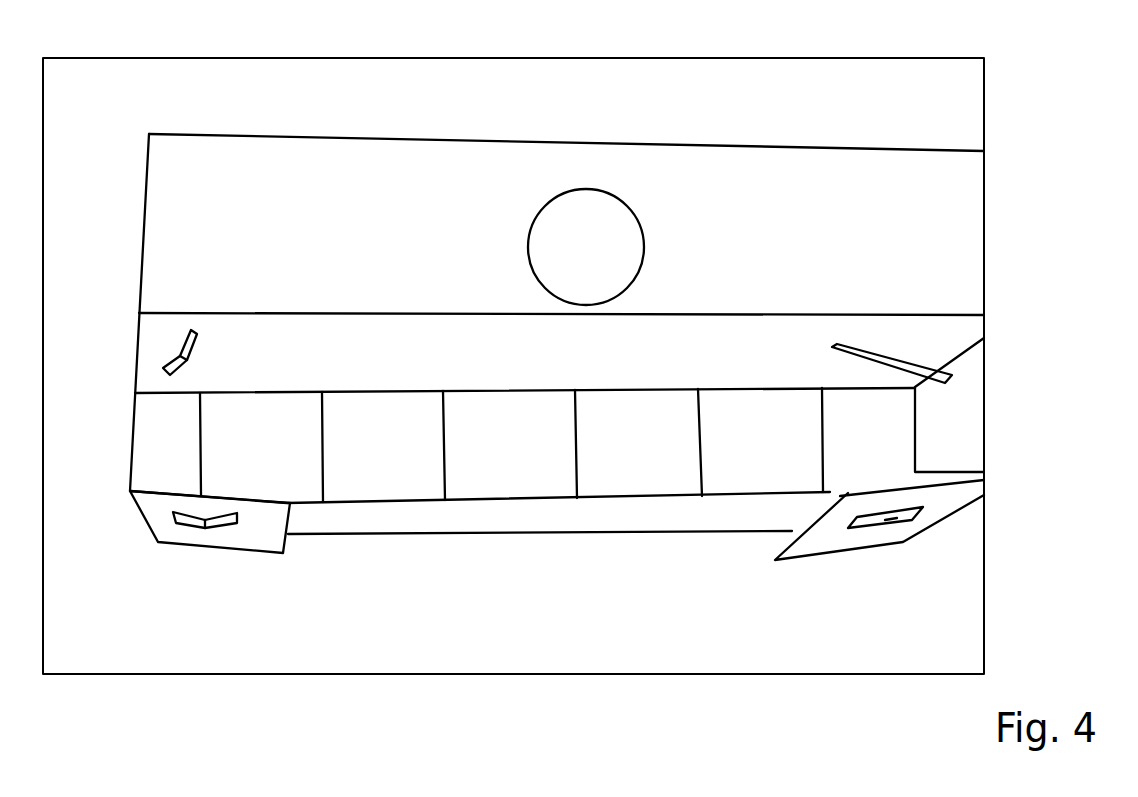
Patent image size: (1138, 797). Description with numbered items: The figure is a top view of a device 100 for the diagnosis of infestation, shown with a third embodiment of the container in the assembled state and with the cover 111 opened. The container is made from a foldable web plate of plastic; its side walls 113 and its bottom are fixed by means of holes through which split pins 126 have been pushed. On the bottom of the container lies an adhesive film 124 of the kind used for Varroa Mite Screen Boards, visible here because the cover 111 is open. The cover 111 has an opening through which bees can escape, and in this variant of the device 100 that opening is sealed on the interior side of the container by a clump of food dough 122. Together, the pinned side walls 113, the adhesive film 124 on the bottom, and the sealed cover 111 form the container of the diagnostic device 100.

The device 100 is at (345, 122).
The cover 111 is at (788, 235).
The side walls 113 is at (542, 515).
The clump of food dough 122 is at (610, 262).
The adhesive film 124 is at (767, 452).
The split pins 126 is at (907, 360).